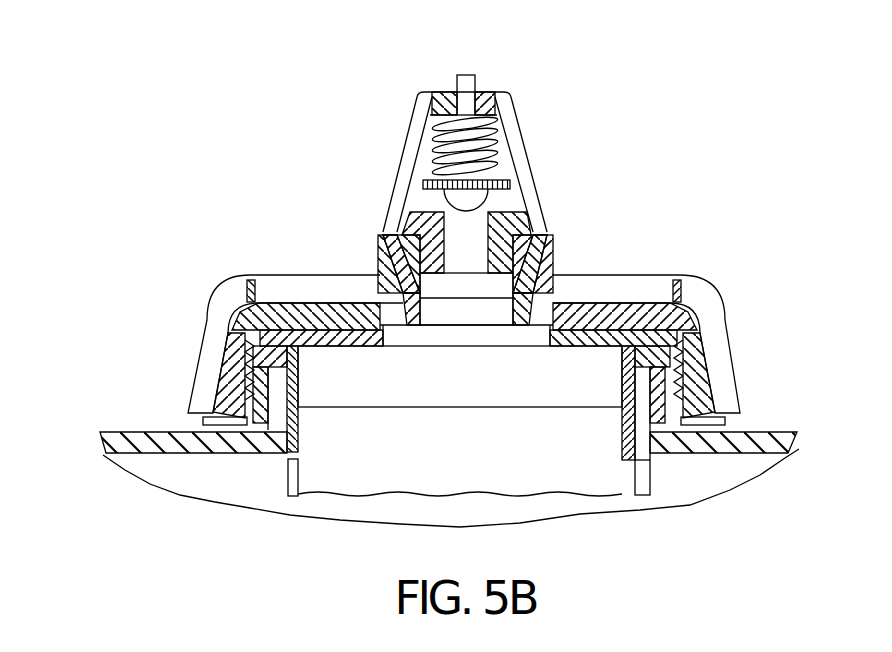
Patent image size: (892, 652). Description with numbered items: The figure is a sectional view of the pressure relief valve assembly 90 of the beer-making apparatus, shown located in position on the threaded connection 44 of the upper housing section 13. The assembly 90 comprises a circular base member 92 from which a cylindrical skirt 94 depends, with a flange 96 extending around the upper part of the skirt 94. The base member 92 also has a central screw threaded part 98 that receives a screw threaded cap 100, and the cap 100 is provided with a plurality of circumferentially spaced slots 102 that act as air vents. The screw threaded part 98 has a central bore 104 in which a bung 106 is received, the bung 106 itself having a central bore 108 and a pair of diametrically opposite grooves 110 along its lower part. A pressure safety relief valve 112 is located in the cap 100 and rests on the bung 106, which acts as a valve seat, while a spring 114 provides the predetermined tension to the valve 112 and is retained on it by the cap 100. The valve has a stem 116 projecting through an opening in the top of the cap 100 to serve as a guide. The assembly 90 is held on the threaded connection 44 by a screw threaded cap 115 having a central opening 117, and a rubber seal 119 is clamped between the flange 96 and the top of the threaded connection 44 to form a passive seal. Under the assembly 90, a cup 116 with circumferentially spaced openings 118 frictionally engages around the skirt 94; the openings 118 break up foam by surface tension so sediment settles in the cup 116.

The upper housing section 13 is at (160, 433).
The threaded connection 44 is at (653, 430).
The pressure relief valve assembly 90 is at (342, 143).
The circular base member 92 is at (357, 350).
The cylindrical skirt 94 is at (310, 375).
The flange 96 is at (637, 327).
The central screw threaded part 98 is at (528, 235).
The screw threaded cap 100 is at (487, 96).
The slots 102 is at (412, 142).
The central bore 104 is at (502, 315).
The bung 106 is at (497, 205).
The central bore 108 is at (459, 283).
The grooves 110 is at (377, 250).
The pressure safety relief valve 112 is at (460, 195).
The spring 114 is at (483, 142).
The screw threaded cap 115 is at (697, 357).
The stem 116 is at (458, 76).
The central opening 117 is at (353, 307).
The openings 118 is at (300, 473).
The rubber seal 119 is at (240, 392).